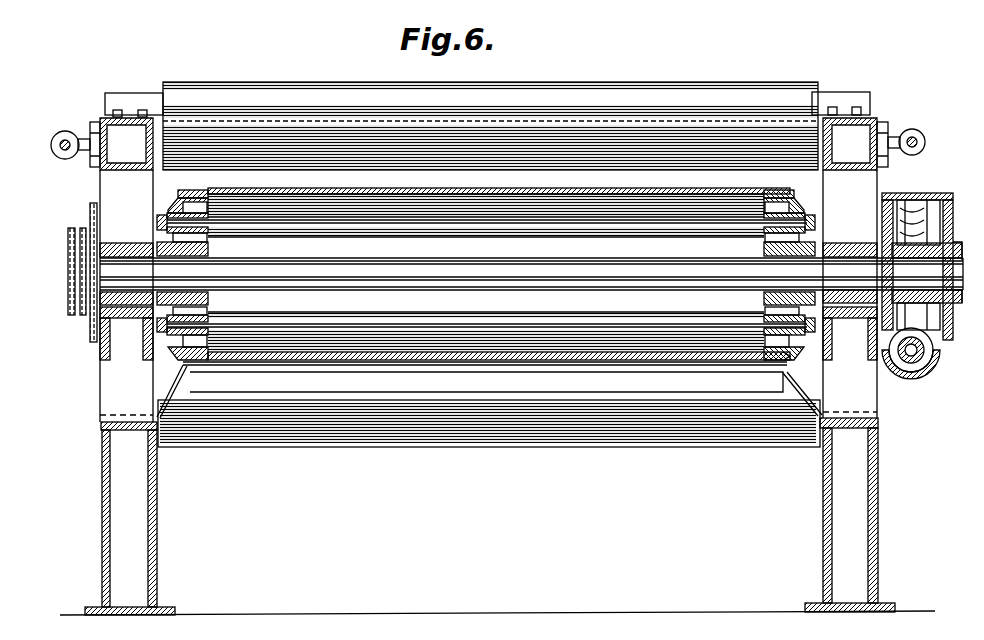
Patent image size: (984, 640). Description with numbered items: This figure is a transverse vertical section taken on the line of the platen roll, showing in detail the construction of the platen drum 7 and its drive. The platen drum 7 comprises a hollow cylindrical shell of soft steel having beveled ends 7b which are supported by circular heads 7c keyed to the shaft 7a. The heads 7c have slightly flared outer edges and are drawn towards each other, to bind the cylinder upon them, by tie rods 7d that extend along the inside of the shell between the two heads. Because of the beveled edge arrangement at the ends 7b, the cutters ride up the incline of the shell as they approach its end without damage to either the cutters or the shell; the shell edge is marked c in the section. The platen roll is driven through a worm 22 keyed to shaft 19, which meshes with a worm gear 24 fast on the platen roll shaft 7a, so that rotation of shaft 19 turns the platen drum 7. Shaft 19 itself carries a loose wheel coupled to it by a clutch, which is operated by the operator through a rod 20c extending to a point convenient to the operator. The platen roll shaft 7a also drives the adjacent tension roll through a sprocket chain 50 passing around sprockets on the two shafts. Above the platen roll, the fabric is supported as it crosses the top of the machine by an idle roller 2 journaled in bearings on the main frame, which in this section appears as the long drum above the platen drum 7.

The idle roller 2 is at (635, 96).
The platen drum 7 is at (583, 188).
The platen roll shaft 7a is at (615, 275).
The beveled ends 7b is at (193, 188).
The circular heads 7c is at (808, 198).
The tie rods 7d is at (398, 330).
The roller shell edge c is at (780, 354).
The sprocket chain 50 is at (90, 212).
The rod 20c is at (57, 143).
The worm gear 24 is at (921, 203).
The worm 22 is at (928, 360).
The shaft 19 is at (911, 356).